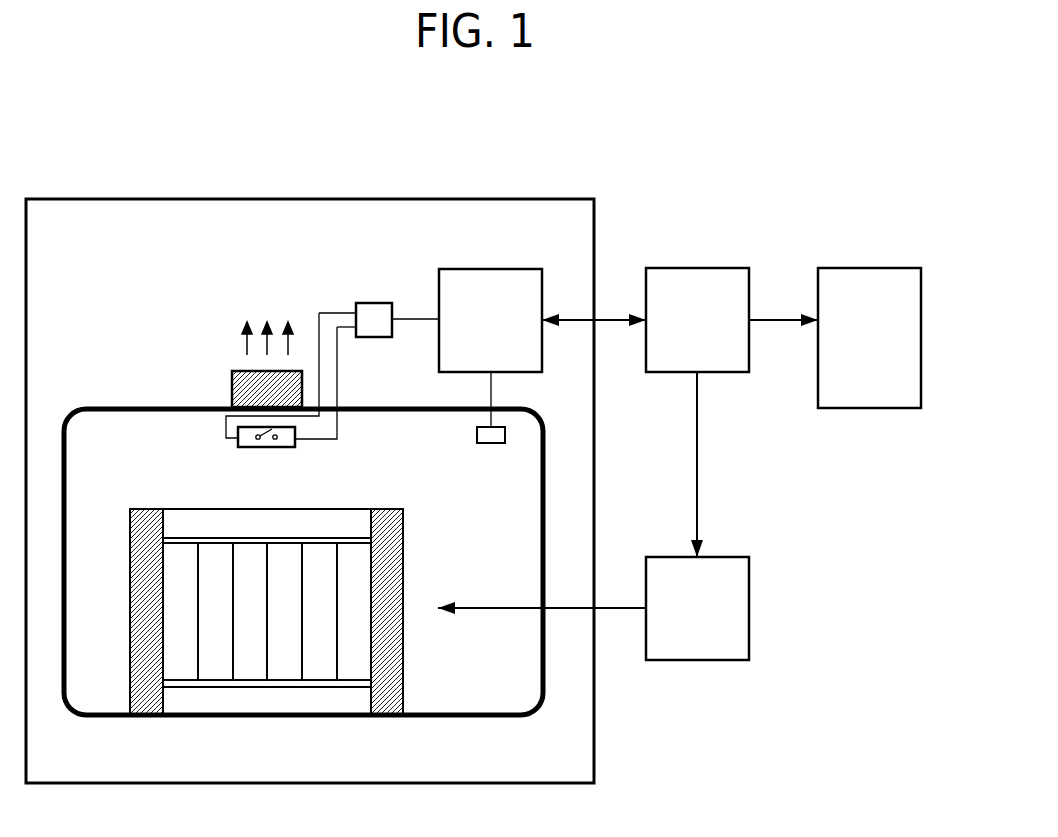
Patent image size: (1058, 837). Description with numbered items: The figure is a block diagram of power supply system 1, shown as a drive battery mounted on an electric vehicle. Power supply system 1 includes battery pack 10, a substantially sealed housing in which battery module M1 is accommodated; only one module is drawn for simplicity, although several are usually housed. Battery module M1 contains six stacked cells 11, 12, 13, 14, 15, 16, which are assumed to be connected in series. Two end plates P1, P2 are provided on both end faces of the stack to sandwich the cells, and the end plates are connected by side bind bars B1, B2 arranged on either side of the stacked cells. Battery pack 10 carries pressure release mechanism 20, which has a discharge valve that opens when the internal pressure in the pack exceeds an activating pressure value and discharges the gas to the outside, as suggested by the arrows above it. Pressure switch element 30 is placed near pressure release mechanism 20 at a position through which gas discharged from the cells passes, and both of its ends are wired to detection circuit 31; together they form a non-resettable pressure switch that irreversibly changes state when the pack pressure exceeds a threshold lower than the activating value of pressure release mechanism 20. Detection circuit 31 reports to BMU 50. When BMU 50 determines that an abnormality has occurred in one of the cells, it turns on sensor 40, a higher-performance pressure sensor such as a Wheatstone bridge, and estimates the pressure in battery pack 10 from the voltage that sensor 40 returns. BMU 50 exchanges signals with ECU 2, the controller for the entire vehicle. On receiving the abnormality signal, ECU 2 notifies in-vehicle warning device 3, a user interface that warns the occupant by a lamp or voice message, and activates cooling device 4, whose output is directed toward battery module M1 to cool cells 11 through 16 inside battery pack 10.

The power supply system 1 is at (551, 199).
The ECU 2 is at (717, 268).
The in-vehicle warning device 3 is at (890, 268).
The cooling device 4 is at (717, 557).
The battery pack 10 is at (547, 433).
The cell 11 is at (172, 553).
The cell 12 is at (207, 553).
The cell 13 is at (240, 553).
The cell 14 is at (276, 553).
The cell 15 is at (310, 553).
The cell 16 is at (344, 553).
The pressure release mechanism 20 is at (243, 372).
The pressure switch element 30 is at (295, 434).
The detection circuit 31 is at (373, 303).
The sensor 40 is at (490, 443).
The BMU 50 is at (500, 269).
The bind bar B1 is at (362, 524).
The bind bar B2 is at (175, 699).
The end plate P1 is at (138, 620).
The end plate P2 is at (395, 672).
The battery module M1 is at (281, 596).